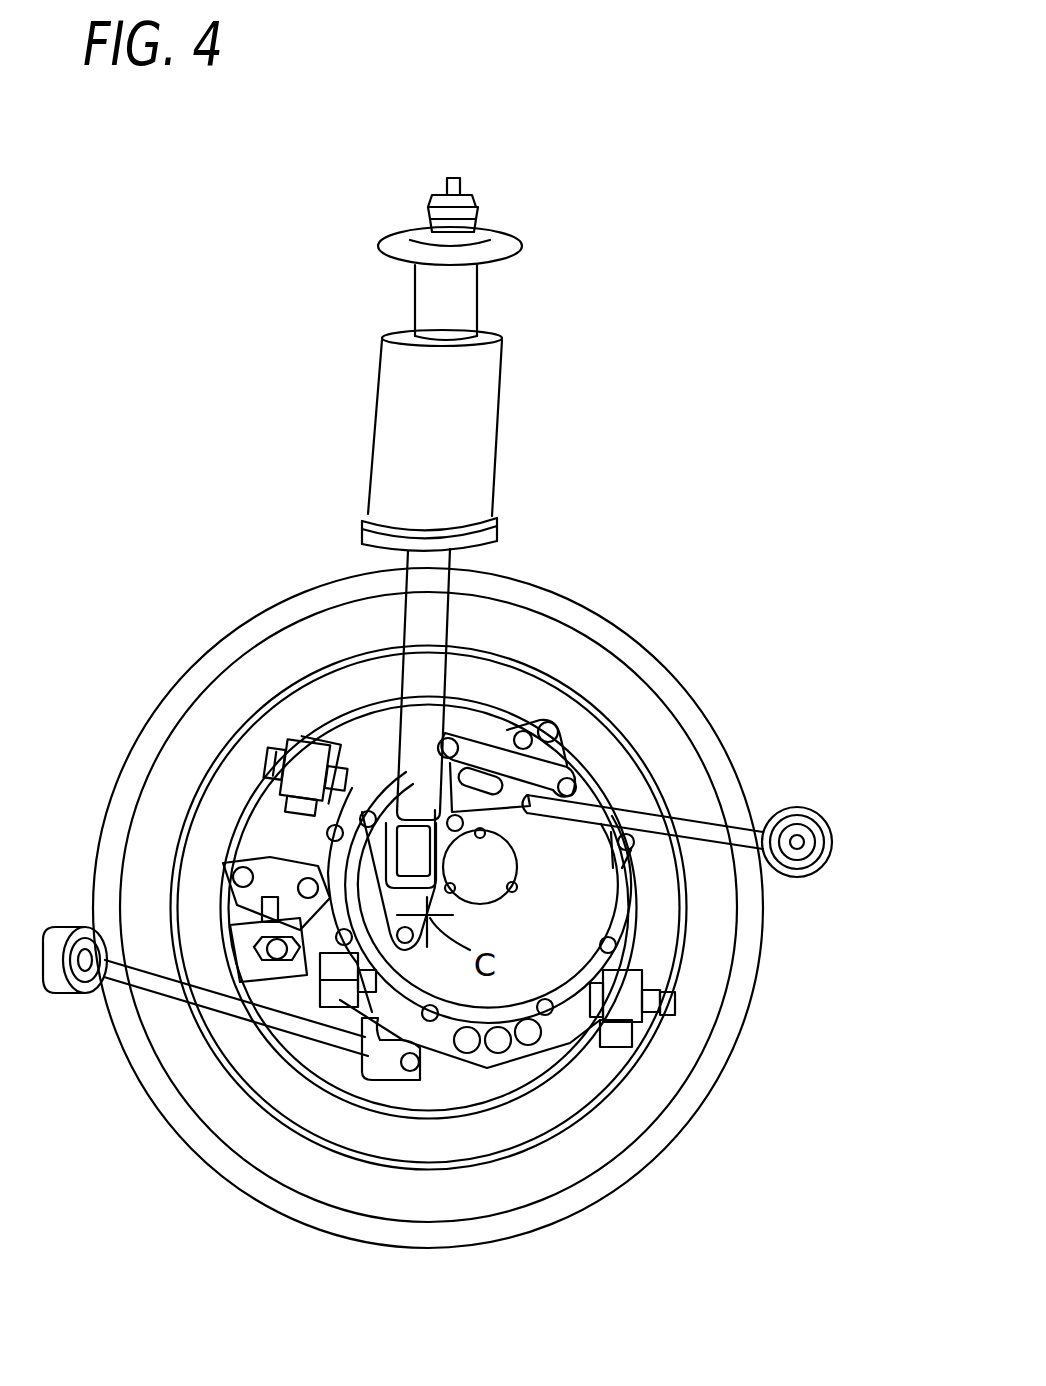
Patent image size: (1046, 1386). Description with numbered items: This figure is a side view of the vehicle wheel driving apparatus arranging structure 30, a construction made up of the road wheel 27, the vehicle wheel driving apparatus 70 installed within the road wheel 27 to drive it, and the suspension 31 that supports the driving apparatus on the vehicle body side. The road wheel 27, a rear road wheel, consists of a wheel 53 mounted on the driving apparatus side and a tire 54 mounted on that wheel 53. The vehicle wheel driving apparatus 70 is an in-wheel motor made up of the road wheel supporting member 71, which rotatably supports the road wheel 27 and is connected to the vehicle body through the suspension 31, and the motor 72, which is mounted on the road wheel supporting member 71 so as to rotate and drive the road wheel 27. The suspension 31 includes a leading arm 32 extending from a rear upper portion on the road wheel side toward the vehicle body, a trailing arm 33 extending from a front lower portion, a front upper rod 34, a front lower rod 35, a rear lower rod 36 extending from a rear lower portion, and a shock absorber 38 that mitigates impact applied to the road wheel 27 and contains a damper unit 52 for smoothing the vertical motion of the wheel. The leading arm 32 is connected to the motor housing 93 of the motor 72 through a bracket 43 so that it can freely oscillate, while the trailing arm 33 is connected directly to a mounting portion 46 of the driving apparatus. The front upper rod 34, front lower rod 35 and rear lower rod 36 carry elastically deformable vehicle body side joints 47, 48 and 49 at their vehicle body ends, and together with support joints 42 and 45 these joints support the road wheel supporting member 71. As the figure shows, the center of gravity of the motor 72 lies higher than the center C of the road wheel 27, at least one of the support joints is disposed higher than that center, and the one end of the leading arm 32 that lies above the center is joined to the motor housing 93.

The road wheel 27 is at (445, 861).
The vehicle wheel driving apparatus arranging structure 30 is at (455, 744).
The suspension 31 is at (491, 495).
The leading arm 32 is at (709, 765).
The trailing arm 33 is at (191, 1052).
The front upper rod 34 is at (246, 684).
The front lower rod 35 is at (178, 840).
The rear lower rod 36 is at (707, 1046).
The shock absorber 38 is at (522, 376).
The support joint 42 is at (800, 830).
The bracket 43 is at (557, 775).
The support joint 45 is at (85, 993).
The mounting portion 46 is at (405, 1082).
The vehicle body side joint 47 is at (265, 770).
The vehicle body side joint 48 is at (292, 922).
The vehicle body side joint 49 is at (662, 1002).
The damper unit 52 is at (430, 612).
The wheel 53 is at (537, 661).
The tire 54 is at (653, 652).
The vehicle wheel driving apparatus 70 is at (455, 744).
The road wheel supporting member 71 is at (492, 1070).
The motor 72 is at (529, 977).
The motor housing 93 is at (597, 893).